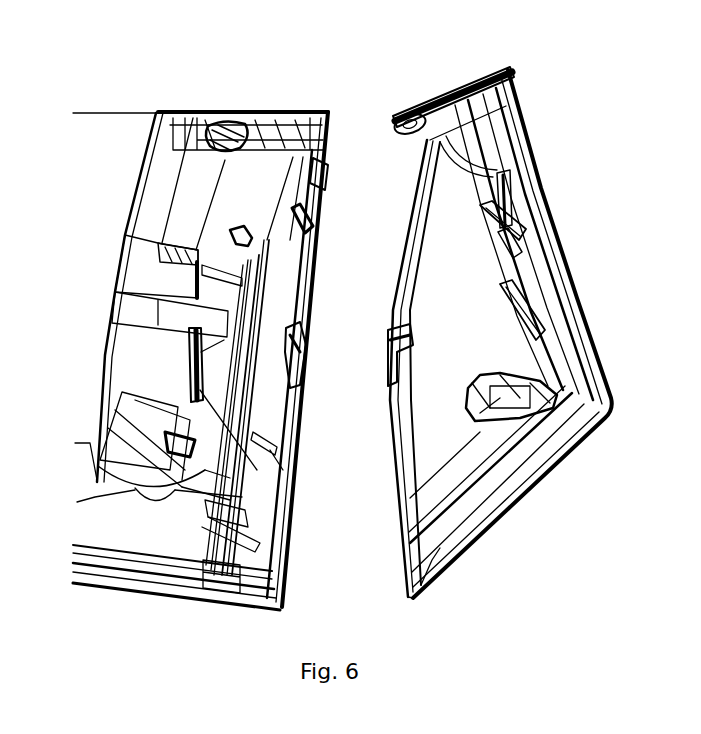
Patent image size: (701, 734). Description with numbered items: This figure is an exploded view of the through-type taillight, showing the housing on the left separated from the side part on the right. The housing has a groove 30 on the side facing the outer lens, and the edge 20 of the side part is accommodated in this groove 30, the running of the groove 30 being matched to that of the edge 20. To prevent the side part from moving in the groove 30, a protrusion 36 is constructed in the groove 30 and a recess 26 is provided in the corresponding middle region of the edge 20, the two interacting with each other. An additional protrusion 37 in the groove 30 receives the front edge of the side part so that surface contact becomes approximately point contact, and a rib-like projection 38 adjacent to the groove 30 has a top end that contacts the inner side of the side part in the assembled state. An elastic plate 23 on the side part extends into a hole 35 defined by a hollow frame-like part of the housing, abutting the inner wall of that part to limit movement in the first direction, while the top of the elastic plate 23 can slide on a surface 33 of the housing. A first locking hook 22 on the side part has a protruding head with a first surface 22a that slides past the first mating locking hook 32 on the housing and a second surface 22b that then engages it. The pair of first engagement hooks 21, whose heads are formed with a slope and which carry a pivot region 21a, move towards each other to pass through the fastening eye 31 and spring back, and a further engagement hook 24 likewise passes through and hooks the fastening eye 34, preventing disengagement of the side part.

The edge 20 is at (402, 442).
The first engagement hook 21 is at (450, 92).
The pivot pin 21a is at (420, 112).
The first locking hook 22 is at (550, 220).
The first surface 22a is at (480, 221).
The second surface 22b is at (497, 249).
The elastic plate 23 is at (500, 293).
The engagement hook 24 is at (470, 394).
The recess 26 is at (386, 345).
The groove 30 is at (318, 276).
The fastening eye 31 is at (220, 118).
The first mating locking hook 32 is at (207, 262).
The surface 33 is at (133, 368).
The fastening eye 34 is at (100, 468).
The hole 35 is at (187, 357).
The protrusion 36 is at (314, 360).
The additional protrusion 37 is at (320, 181).
The projection 38 is at (326, 213).